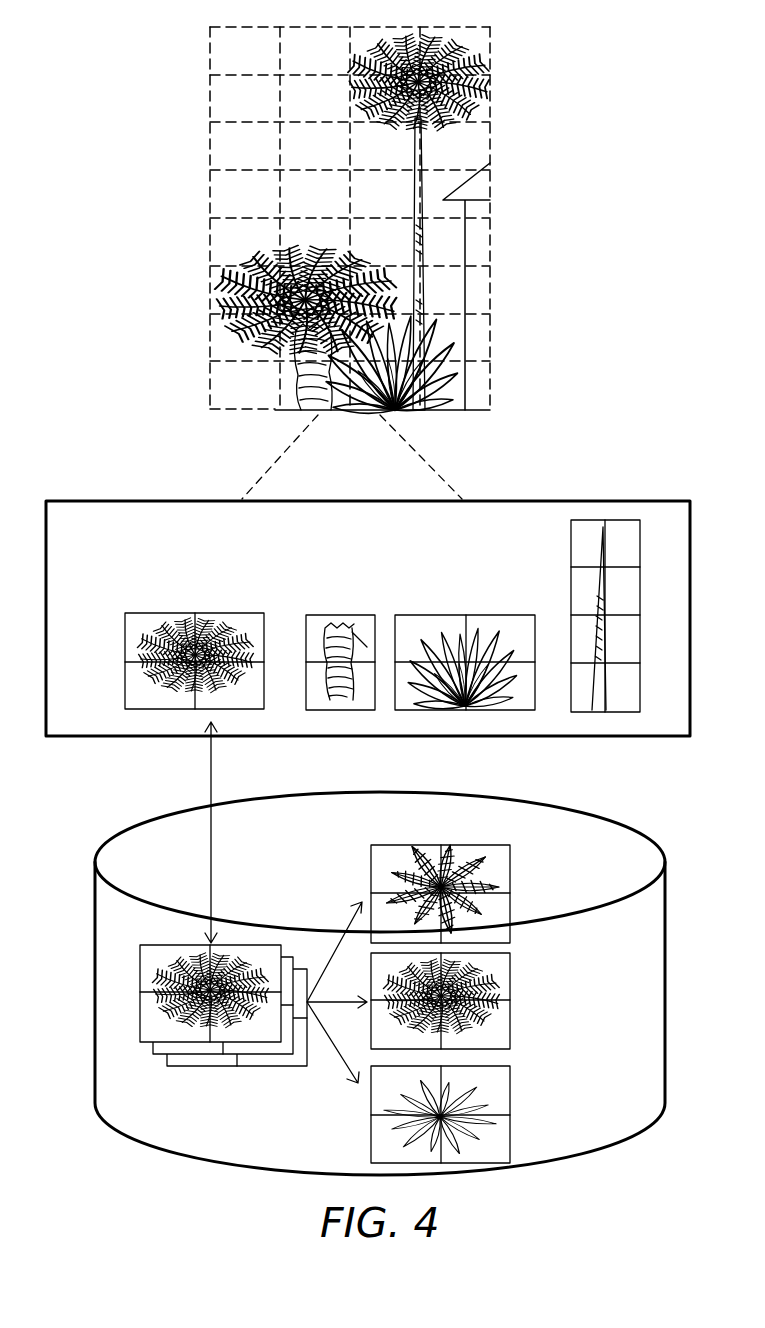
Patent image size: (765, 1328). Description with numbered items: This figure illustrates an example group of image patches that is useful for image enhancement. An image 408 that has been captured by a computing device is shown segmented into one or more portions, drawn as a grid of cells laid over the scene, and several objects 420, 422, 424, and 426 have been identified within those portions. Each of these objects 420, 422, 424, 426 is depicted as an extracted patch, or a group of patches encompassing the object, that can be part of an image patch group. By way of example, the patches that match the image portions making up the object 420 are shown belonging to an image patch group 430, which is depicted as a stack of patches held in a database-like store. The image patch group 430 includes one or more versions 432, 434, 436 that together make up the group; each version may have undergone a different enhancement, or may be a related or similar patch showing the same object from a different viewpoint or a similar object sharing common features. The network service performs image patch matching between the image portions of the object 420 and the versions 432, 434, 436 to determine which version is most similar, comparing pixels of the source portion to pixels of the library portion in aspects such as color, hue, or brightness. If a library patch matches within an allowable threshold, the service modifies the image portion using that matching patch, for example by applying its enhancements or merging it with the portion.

The image 408 is at (491, 67).
The object 420 is at (265, 617).
The object 422 is at (375, 618).
The object 424 is at (537, 619).
The object 426 is at (641, 530).
The image patch group 430 is at (141, 960).
The version 432 is at (512, 880).
The version 434 is at (512, 990).
The version 436 is at (512, 1100).